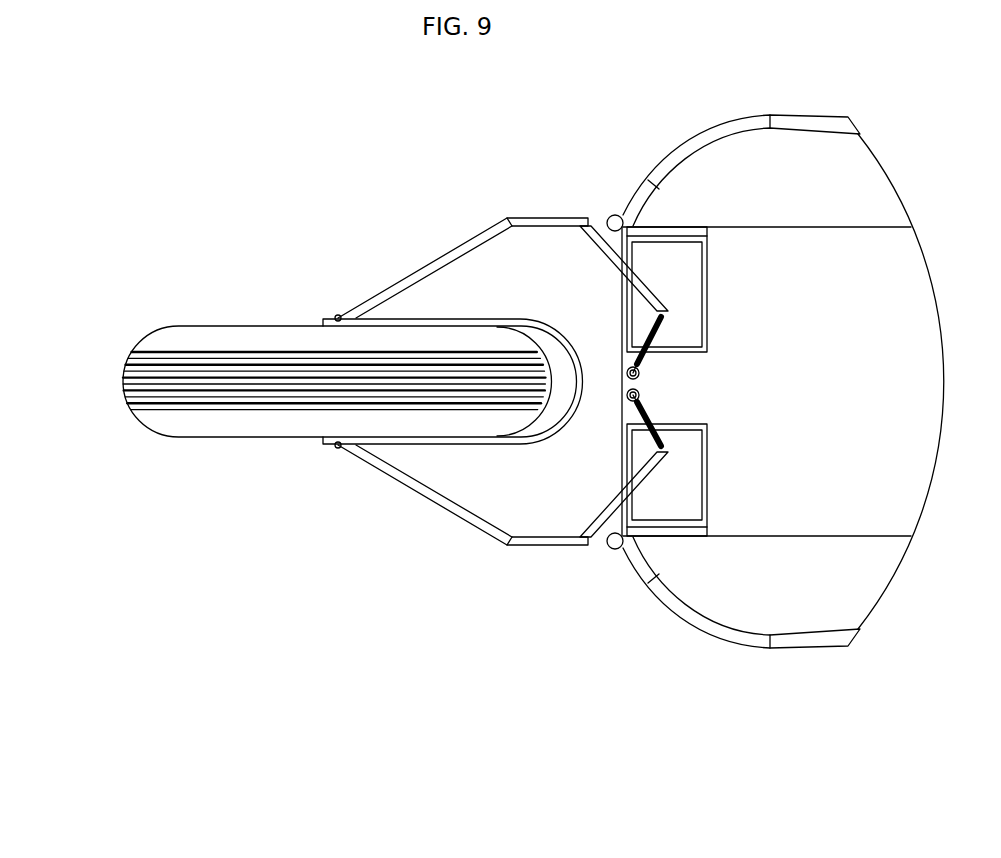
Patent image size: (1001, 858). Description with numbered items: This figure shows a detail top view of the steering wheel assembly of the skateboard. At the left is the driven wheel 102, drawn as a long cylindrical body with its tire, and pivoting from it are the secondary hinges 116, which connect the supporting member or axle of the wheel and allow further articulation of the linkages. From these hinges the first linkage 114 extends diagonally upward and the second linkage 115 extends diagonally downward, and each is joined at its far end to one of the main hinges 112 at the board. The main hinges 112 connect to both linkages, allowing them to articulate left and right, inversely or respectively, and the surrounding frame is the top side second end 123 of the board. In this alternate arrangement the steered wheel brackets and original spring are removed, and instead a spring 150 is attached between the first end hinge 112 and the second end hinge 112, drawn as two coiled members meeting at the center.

The driven wheel 102 is at (118, 389).
The main hinge 112 is at (606, 214).
The first linkage 114 is at (388, 284).
The second linkage 115 is at (455, 520).
The secondary hinge 116 is at (317, 319).
The top side second end 123 is at (852, 657).
The spring 150 is at (655, 358).